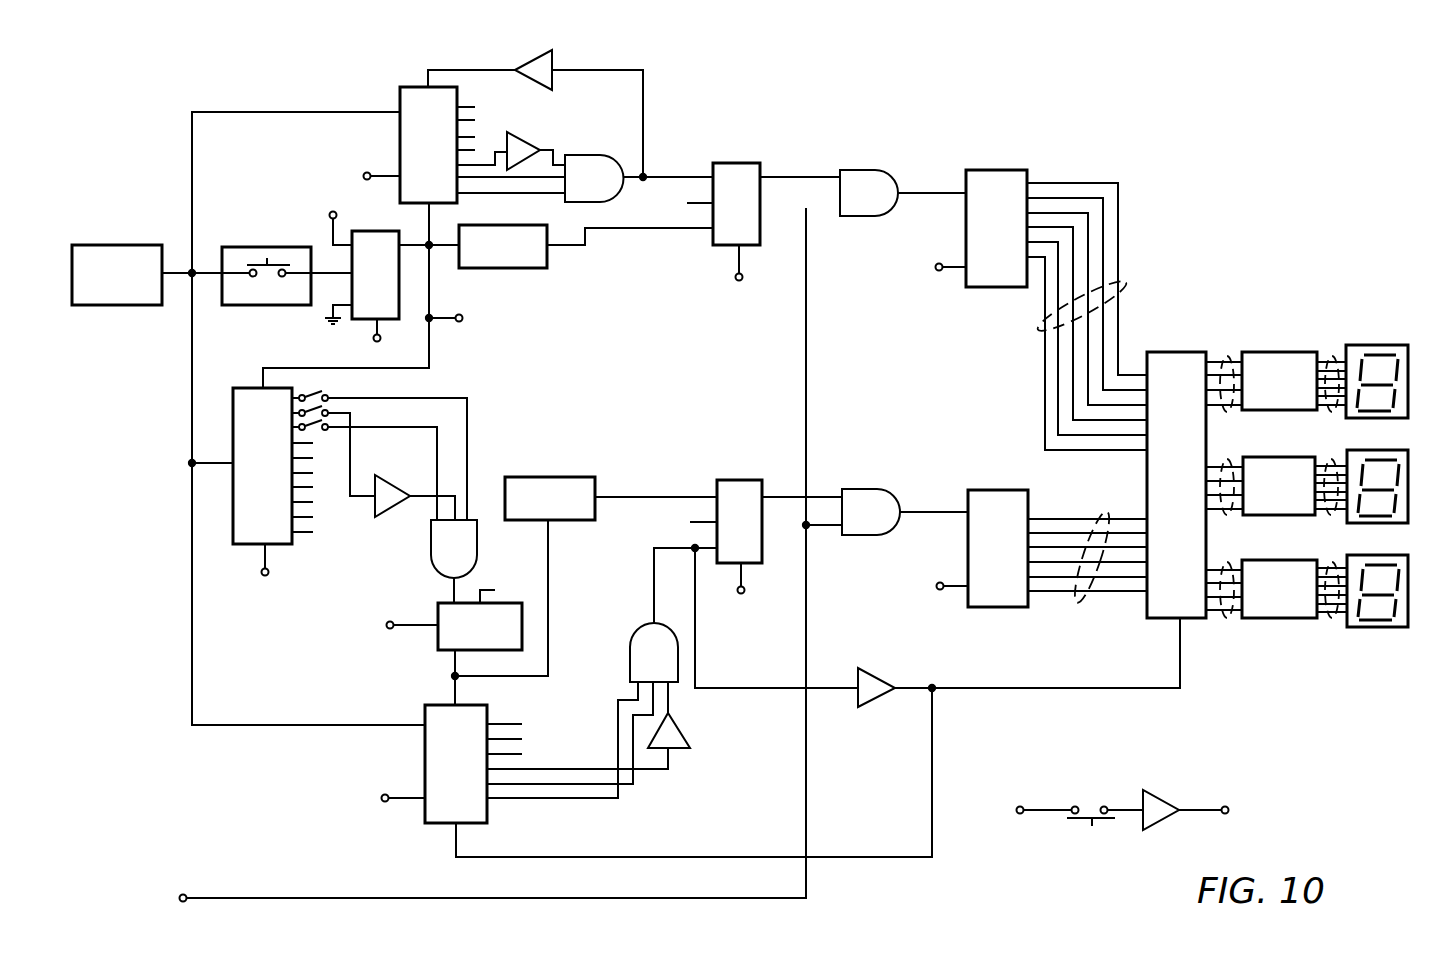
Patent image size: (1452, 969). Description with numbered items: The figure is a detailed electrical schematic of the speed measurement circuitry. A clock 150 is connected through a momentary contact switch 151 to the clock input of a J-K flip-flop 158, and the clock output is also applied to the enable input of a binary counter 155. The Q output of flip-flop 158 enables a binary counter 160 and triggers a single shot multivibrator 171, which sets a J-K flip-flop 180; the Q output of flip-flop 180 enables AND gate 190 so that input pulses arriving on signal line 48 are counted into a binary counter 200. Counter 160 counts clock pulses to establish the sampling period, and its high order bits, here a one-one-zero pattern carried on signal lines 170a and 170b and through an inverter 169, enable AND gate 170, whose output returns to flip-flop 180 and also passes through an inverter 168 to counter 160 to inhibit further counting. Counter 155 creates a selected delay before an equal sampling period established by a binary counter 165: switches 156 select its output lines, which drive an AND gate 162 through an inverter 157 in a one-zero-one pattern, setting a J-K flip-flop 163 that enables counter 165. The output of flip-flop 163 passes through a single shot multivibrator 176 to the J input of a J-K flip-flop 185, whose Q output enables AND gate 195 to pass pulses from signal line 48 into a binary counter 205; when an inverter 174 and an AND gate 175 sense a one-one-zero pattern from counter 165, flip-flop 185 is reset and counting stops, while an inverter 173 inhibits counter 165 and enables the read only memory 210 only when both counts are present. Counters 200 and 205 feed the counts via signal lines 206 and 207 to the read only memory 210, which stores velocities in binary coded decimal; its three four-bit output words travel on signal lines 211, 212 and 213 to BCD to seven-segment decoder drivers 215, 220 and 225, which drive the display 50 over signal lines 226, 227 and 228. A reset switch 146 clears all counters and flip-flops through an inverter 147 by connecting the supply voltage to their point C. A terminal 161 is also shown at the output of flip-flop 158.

The clock 150 is at (123, 251).
The momentary contact switch 151 is at (250, 261).
The binary counter 155 is at (242, 398).
The switches 156 is at (317, 393).
The inverter 157 is at (391, 502).
The J-K flip-flop 158 is at (370, 240).
The binary counter 160 is at (400, 94).
The terminal 161 is at (463, 323).
The AND gate 162 is at (457, 553).
The J-K flip-flop 163 is at (439, 639).
The binary counter 165 is at (425, 760).
The inverter 168 is at (552, 62).
The inverter 169 is at (516, 150).
The AND gate 170 is at (590, 169).
The signal line 170a is at (515, 196).
The signal line 170b is at (487, 180).
The single shot multivibrator 171 is at (533, 260).
The inverter 173 is at (880, 677).
The inverter 174 is at (683, 727).
The AND gate 175 is at (647, 646).
The single shot multivibrator 176 is at (573, 483).
The J-K flip-flop 180 is at (735, 175).
The J-K flip-flop 185 is at (740, 493).
The AND gate 190 is at (873, 184).
The AND gate 195 is at (867, 503).
The binary counter 200 is at (985, 182).
The binary counter 205 is at (982, 512).
The signal lines 206 is at (1130, 283).
The signal lines 207 is at (1078, 607).
The read only memory 210 is at (1170, 373).
The signal lines 211 is at (1224, 360).
The signal lines 212 is at (1222, 474).
The signal lines 213 is at (1227, 617).
The BCD to 7-segment decoder driver 215 is at (1273, 365).
The BCD to 7-segment decoder driver 220 is at (1267, 469).
The BCD to 7-segment decoder driver 225 is at (1269, 572).
The signal lines 226 is at (1333, 357).
The signal lines 227 is at (1333, 472).
The signal lines 228 is at (1332, 615).
The display 50 is at (1407, 388).
The signal line 48 is at (185, 893).
The reset switch 146 is at (1092, 827).
The inverter 147 is at (1160, 810).